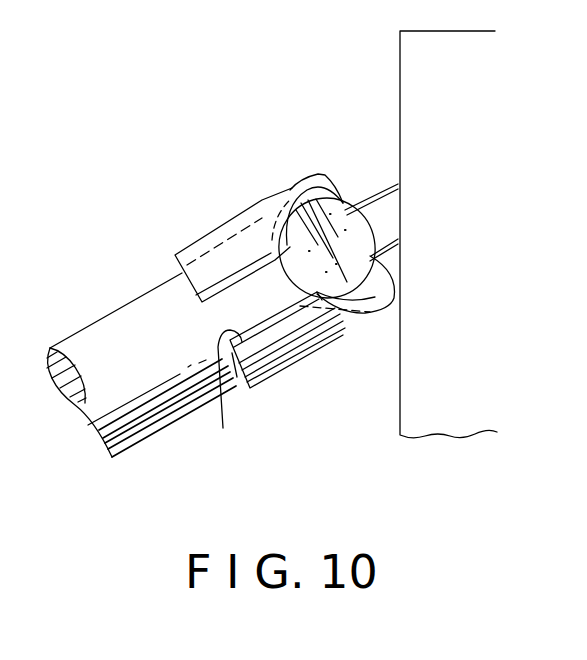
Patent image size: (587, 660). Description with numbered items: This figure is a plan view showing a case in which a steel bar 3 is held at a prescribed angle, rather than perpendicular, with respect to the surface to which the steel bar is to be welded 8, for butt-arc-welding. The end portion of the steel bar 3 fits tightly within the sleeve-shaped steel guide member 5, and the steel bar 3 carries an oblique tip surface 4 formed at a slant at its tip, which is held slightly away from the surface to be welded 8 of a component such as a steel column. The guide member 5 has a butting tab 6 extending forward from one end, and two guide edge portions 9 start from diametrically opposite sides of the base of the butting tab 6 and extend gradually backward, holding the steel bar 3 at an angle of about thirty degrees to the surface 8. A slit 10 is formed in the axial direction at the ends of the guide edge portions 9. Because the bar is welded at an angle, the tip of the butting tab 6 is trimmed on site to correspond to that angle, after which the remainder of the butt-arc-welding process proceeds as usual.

The steel bar 3 is at (103, 322).
The oblique tip surface 4 is at (330, 213).
The guide member 5 is at (203, 233).
The butting tab 6 is at (380, 203).
The surface to which the steel bar is to be welded 8 is at (398, 72).
The guide edge portions 9 is at (269, 205).
The slit 10 is at (223, 428).